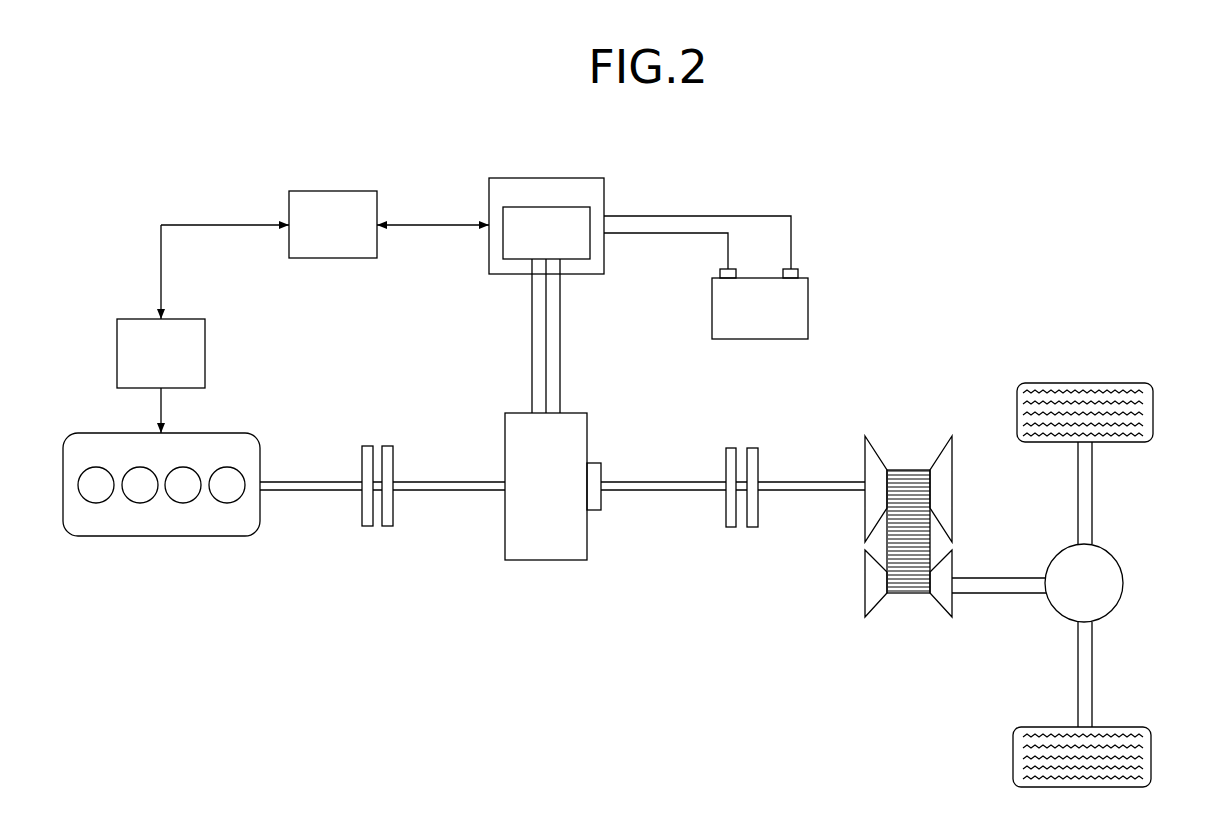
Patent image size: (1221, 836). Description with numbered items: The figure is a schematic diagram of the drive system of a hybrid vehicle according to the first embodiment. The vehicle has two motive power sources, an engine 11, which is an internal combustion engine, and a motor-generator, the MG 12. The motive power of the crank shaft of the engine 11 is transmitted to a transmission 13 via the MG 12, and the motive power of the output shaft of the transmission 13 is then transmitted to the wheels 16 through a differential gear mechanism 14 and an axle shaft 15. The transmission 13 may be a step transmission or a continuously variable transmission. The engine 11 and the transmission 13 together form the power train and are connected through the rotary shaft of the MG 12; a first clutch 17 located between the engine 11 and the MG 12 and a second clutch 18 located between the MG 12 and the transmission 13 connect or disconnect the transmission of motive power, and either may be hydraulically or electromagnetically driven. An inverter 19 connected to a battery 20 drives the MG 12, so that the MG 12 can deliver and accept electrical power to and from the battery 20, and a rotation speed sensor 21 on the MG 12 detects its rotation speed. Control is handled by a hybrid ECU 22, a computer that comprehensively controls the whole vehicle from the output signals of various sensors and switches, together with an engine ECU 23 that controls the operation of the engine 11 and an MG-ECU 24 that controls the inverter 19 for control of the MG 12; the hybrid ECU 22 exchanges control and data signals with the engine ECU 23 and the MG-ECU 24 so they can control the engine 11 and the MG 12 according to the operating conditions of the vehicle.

The engine 11 is at (165, 536).
The motor-generator (MG) 12 is at (546, 560).
The transmission 13 is at (862, 600).
The differential gear mechanism 14 is at (1122, 585).
The axle shaft 15 is at (1092, 488).
The wheels 16 is at (1082, 383).
The first clutch 17 is at (366, 527).
The second clutch 18 is at (731, 527).
The inverter 19 is at (555, 178).
The battery 20 is at (808, 308).
The rotation speed sensor 21 is at (601, 500).
The hybrid ECU 22 is at (337, 191).
The engine ECU 23 is at (205, 340).
The MG-ECU 24 is at (590, 214).